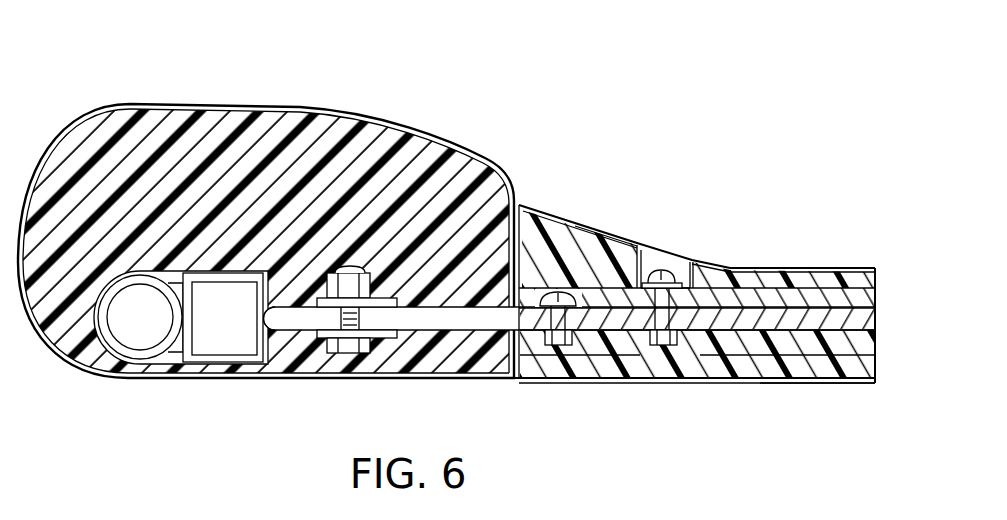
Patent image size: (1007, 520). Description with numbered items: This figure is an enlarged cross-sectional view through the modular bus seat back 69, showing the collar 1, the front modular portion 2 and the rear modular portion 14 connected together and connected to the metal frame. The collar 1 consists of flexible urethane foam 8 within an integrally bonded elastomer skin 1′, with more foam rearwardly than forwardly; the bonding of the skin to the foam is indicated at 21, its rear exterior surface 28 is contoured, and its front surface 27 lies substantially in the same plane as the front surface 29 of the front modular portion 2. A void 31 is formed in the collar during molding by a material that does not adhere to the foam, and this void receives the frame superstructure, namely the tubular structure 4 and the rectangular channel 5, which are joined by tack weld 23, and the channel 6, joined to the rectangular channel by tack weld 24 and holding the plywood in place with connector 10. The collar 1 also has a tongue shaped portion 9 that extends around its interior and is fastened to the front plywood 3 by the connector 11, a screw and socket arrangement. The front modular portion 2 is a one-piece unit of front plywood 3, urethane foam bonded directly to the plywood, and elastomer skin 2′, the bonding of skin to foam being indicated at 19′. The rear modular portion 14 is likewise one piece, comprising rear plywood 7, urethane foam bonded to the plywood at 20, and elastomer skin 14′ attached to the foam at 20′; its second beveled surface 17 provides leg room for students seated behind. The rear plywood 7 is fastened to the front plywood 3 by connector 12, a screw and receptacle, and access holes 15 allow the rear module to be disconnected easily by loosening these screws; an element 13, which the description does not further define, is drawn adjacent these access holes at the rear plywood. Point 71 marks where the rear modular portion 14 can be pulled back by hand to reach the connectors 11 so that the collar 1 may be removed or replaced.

The modular bus seat back 69 is at (100, 92).
The collar 1 is at (57, 355).
The elastomer skin 1′ is at (392, 125).
The urethane foam 8 is at (288, 120).
The rear exterior surface 28 is at (235, 103).
The bonding of integral skin to urethane foam 21 is at (107, 377).
The front surface 27 is at (275, 382).
The void 31 is at (173, 272).
The tubular structure 4 is at (140, 357).
The tack weld 23 is at (182, 358).
The rectangular channel 5 is at (217, 362).
The channel 6 is at (290, 333).
The tack weld 24 is at (266, 331).
The connector 10 is at (352, 349).
The pull-back point 71 is at (538, 198).
The second beveled surface 17 is at (573, 223).
The rear modular portion 14 is at (600, 221).
The access holes 15 is at (657, 253).
The screw 13 is at (607, 292).
The rear plywood 7 is at (732, 273).
The elastomer skin 14′ is at (762, 273).
The bonding of urethane foam to rear plywood 20 is at (787, 277).
The attachment of elastomer skin to urethane foam 20′ is at (827, 278).
The connector 11 is at (556, 327).
The tongue shaped portion 9 is at (606, 293).
The connector 12 is at (663, 327).
The elastomer skin 2′ is at (695, 380).
The front surface 29 is at (766, 383).
The bonding of elastomer skin to urethane foam 19′ is at (800, 384).
The front plywood 3 is at (815, 322).
The front modular portion 2 is at (855, 384).